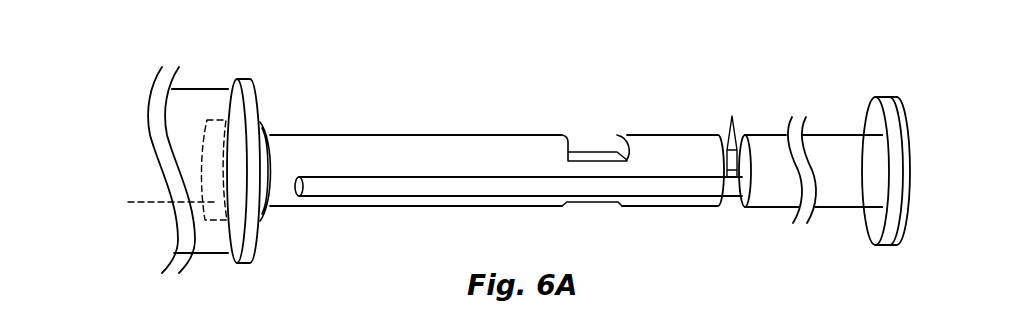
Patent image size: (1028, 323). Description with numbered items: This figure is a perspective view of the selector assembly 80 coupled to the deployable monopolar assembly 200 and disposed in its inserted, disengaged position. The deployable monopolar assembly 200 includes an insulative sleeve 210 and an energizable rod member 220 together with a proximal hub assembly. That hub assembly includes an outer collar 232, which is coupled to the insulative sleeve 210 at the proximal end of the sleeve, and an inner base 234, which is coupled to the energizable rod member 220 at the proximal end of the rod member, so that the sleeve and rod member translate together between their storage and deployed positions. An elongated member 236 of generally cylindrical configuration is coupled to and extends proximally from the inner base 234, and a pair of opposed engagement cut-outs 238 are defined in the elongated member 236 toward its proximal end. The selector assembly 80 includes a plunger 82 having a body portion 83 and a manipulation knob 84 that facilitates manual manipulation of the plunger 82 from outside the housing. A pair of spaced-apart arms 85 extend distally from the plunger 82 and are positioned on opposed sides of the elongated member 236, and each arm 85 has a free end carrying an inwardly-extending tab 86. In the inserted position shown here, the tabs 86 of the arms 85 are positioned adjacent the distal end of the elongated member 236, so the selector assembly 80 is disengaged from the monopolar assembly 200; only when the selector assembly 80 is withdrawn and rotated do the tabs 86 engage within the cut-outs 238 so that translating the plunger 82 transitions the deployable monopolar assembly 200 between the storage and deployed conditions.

The deployable monopolar assembly 200 is at (145, 68).
The insulative sleeve 210 is at (187, 89).
The inner base 234 is at (207, 168).
The energizable rod member 220 is at (158, 203).
The outer collar 232 is at (243, 258).
The elongated member 236 is at (312, 142).
The engagement cut-outs 238 is at (597, 160).
The inwardly-extending tab 86 is at (296, 198).
The selector assembly 80 is at (725, 90).
The arms 85 is at (731, 128).
The plunger 82 is at (830, 222).
The body portion 83 is at (878, 160).
The manipulation knob 84 is at (900, 221).